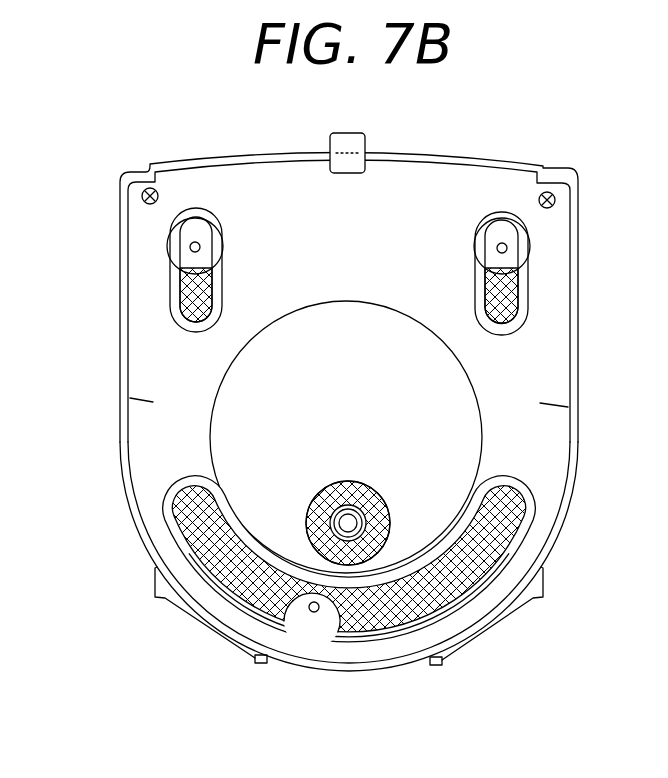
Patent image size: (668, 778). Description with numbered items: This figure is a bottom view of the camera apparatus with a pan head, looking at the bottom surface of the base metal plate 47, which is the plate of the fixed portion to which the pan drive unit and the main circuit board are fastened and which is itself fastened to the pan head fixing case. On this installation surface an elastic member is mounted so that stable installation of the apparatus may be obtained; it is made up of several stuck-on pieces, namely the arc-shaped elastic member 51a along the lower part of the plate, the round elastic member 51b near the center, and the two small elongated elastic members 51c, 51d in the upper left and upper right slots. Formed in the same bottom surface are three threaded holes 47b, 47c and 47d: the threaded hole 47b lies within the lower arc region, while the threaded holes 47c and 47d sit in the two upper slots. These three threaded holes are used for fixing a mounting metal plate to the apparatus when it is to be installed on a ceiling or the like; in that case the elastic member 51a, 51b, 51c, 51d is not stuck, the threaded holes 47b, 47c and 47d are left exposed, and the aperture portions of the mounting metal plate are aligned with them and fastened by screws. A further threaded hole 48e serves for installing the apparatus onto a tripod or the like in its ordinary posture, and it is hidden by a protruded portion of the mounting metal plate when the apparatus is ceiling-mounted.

The base metal plate 47 is at (412, 195).
The threaded hole 47b is at (314, 612).
The threaded hole 47c is at (195, 247).
The threaded hole 47d is at (502, 248).
The threaded hole 48e is at (245, 605).
The elastic member 51a is at (455, 603).
The elastic member 51b is at (380, 493).
The elastic member 51c is at (180, 300).
The elastic member 51d is at (518, 293).